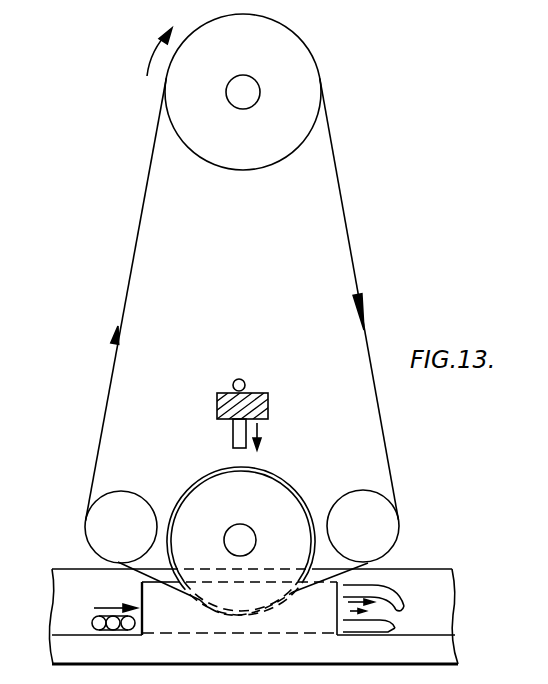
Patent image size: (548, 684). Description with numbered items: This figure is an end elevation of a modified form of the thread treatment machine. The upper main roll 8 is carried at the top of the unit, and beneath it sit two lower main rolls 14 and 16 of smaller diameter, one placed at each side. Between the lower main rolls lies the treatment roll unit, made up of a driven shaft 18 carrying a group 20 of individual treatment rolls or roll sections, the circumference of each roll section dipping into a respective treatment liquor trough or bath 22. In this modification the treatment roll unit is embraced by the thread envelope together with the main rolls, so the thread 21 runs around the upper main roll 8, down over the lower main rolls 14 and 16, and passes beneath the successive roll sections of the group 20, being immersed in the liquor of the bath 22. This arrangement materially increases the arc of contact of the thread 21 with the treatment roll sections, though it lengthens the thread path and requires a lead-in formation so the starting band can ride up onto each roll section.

The upper main roll 8 is at (231, 164).
The lower main roll 14 is at (98, 517).
The drive input housing 16 is at (390, 512).
The driven shaft 18 is at (233, 530).
The group of treatment rolls 20 is at (279, 471).
The thread 21 is at (136, 243).
The treatment liquor trough 22 is at (157, 598).